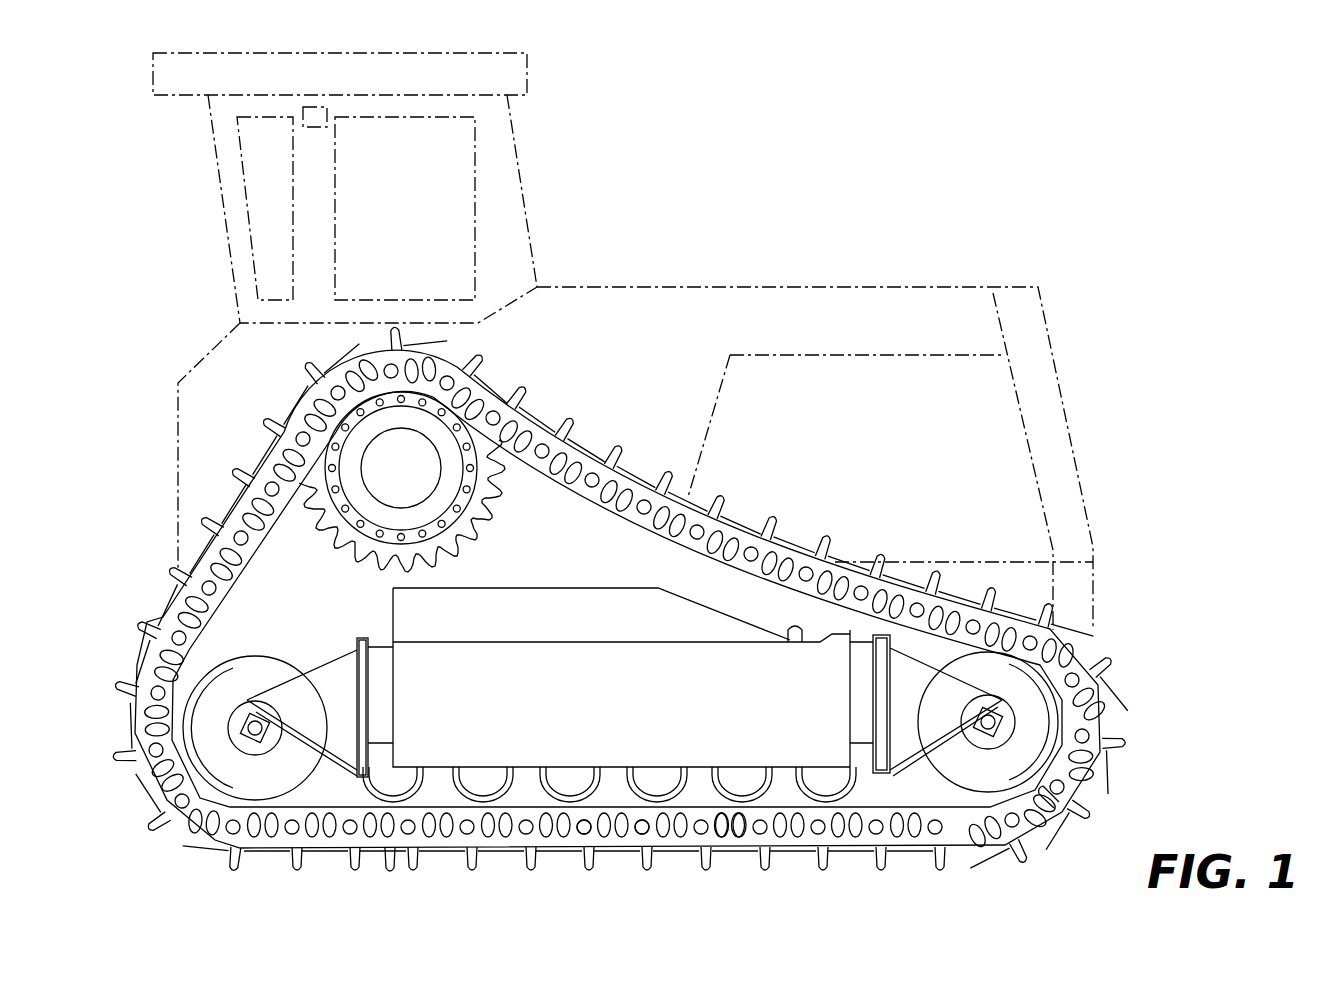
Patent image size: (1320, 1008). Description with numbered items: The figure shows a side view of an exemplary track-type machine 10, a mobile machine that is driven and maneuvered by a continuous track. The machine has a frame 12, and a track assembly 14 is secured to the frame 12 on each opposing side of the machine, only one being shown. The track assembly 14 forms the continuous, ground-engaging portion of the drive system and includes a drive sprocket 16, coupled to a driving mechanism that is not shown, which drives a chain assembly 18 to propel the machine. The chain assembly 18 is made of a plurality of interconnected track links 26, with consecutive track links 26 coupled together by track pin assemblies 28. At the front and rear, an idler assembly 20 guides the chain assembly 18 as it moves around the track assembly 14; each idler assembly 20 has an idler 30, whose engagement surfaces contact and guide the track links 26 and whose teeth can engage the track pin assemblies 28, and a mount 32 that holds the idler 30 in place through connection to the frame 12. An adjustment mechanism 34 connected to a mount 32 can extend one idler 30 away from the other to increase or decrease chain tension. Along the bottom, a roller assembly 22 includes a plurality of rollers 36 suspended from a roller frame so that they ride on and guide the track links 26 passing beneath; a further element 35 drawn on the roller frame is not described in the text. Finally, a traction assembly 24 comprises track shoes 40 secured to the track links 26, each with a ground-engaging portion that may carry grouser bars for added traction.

The track-type machine 10 is at (713, 222).
The frame 12 is at (337, 610).
The track assembly 14 is at (1130, 627).
The drive sprocket 16 is at (523, 531).
The chain assembly 18 is at (640, 538).
The idler assembly 20 is at (264, 614).
The roller assembly 22 is at (479, 620).
The traction assembly 24 is at (1000, 860).
The track link 26 is at (754, 845).
The track pin assembly 28 is at (638, 845).
The idler 30 is at (283, 633).
The mount 32 is at (302, 719).
The adjustment mechanism 34 is at (652, 644).
The frame body 35 is at (502, 681).
The roller 36 is at (443, 767).
The track shoe 40 is at (392, 858).